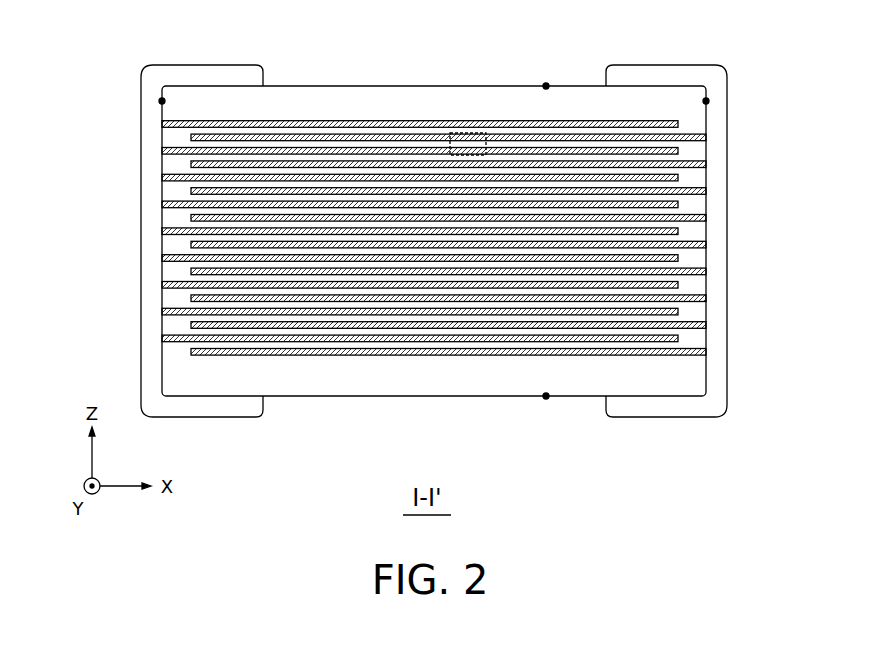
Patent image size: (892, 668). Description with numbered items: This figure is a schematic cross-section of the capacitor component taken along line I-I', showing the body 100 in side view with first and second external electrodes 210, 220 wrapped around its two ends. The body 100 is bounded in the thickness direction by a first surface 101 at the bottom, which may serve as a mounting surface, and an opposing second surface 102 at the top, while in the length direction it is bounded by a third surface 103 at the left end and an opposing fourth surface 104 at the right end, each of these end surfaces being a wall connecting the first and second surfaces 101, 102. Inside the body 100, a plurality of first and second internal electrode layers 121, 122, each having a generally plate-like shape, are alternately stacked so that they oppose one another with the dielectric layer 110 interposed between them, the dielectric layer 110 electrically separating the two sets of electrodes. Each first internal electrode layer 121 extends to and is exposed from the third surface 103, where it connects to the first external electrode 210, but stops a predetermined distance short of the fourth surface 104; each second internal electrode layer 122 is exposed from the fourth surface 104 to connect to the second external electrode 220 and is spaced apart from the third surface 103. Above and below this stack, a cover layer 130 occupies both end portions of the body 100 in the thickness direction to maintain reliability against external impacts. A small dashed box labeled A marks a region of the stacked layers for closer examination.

The body 100 is at (307, 86).
The first surface 101 is at (546, 396).
The second surface 102 is at (546, 86).
The third surface 103 is at (160, 101).
The fourth surface 104 is at (708, 101).
The dielectric layer 110 is at (422, 133).
The first internal electrode layer 121 is at (178, 147).
The second internal electrode layer 122 is at (690, 136).
The cover layer 130 is at (367, 100).
The first external electrode 210 is at (208, 75).
The second external electrode 220 is at (666, 75).
The region A is at (473, 133).